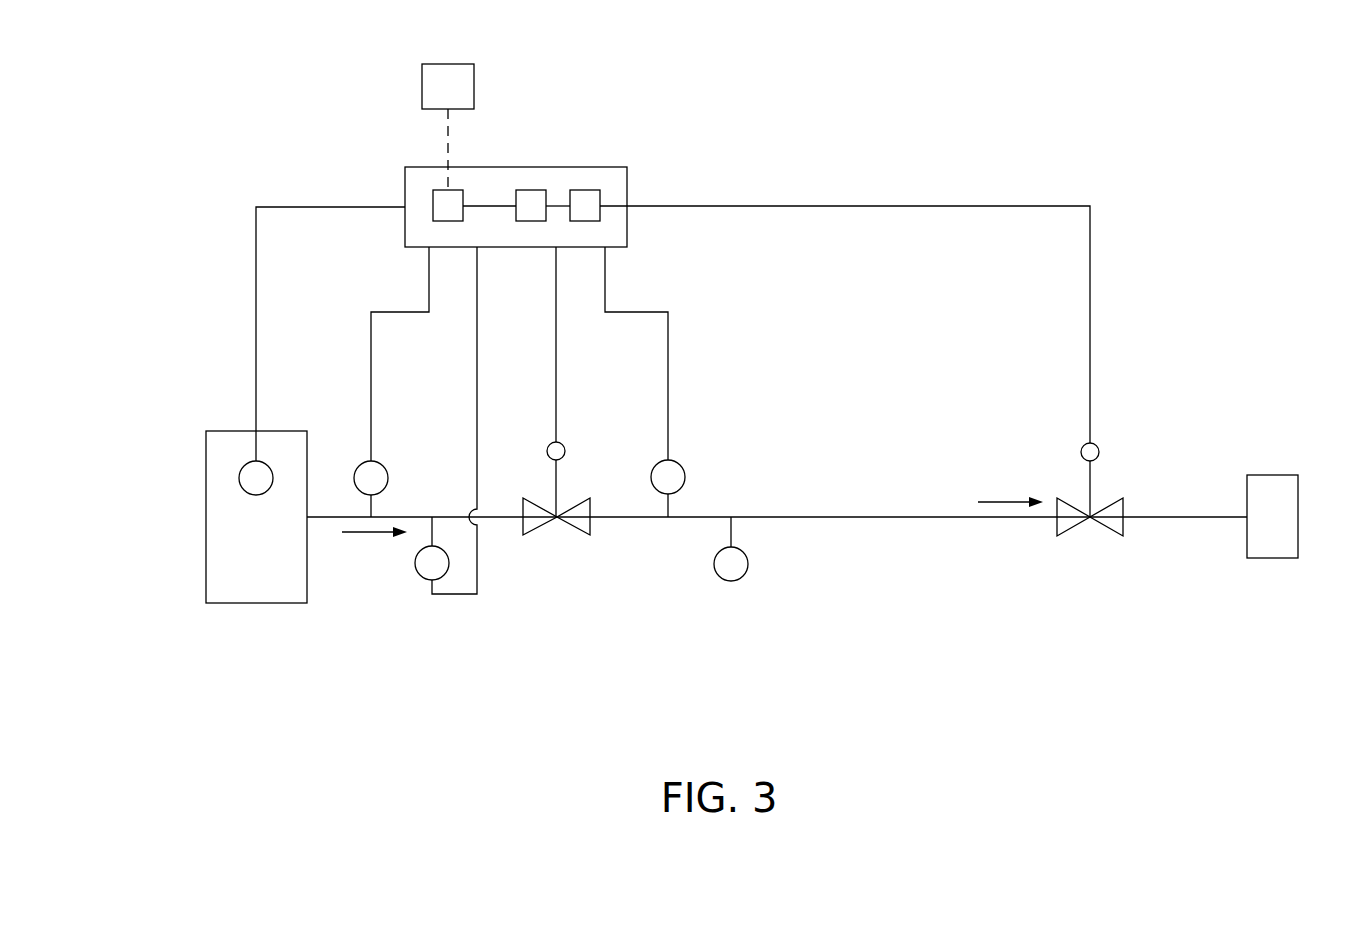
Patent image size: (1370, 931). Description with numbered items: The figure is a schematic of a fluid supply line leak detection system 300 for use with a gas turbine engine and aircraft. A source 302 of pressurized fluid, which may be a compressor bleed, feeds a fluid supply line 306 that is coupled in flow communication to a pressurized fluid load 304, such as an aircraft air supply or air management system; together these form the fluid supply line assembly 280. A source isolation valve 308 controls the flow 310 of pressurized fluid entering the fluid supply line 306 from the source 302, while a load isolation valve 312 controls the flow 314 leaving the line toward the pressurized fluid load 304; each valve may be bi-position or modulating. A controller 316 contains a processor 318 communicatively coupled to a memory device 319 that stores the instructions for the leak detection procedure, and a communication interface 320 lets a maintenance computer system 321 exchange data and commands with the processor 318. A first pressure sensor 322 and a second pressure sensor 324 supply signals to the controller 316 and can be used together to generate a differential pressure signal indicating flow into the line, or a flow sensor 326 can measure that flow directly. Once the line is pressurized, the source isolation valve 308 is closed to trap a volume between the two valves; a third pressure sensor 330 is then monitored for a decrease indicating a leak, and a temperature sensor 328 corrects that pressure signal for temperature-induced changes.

The fluid supply line leak detection system 300 is at (760, 112).
The source 302 is at (206, 448).
The pressurized fluid load 304 is at (1298, 493).
The fluid supply line 306 is at (883, 518).
The source isolation valve 308 is at (590, 530).
The flow 310 is at (368, 533).
The load isolation valve 312 is at (1058, 532).
The flow 314 is at (998, 501).
The controller 316 is at (588, 167).
The processor 318 is at (531, 190).
The memory device 319 is at (592, 199).
The communication interface 320 is at (440, 200).
The maintenance computer system 321 is at (431, 99).
The first pressure sensor 322 is at (242, 486).
The second pressure sensor 324 is at (389, 478).
The flow sensor 326 is at (425, 578).
The temperature sensor 328 is at (684, 477).
The third pressure sensor 330 is at (748, 563).
The fluid supply line assembly 280 is at (781, 610).